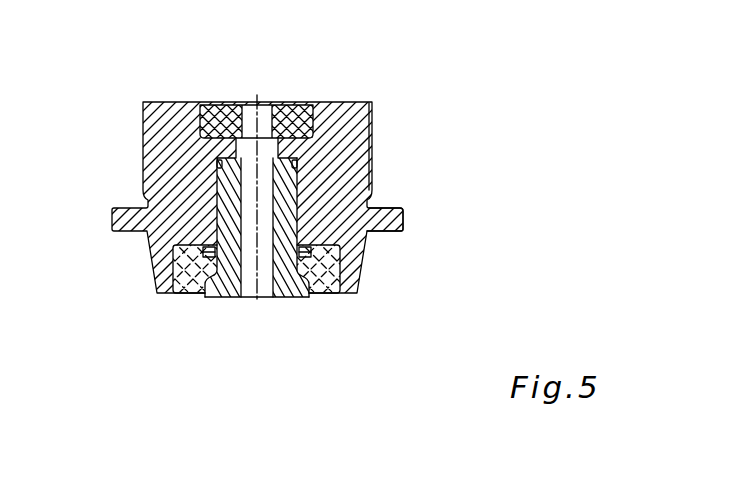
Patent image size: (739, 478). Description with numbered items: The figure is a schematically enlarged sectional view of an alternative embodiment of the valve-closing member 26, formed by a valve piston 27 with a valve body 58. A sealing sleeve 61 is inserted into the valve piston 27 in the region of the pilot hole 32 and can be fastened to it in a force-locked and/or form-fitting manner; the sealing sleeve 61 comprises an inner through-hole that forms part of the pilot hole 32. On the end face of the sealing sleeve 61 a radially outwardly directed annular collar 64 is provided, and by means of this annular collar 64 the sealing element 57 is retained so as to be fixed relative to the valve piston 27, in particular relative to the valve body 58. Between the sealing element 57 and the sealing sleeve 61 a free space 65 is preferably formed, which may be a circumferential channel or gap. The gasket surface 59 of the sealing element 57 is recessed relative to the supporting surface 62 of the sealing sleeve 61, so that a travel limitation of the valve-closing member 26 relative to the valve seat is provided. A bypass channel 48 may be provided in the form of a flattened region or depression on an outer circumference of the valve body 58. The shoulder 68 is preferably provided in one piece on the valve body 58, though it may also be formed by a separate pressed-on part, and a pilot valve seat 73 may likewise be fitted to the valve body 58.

The valve-closing member 26 is at (125, 296).
The valve piston 27 is at (402, 117).
The pilot hole 32 is at (262, 287).
The bypass channel 48 is at (375, 108).
The sealing element 57 is at (188, 287).
The valve body 58 is at (360, 162).
The gasket surface 59 is at (332, 295).
The sealing sleeve 61 is at (228, 280).
The supporting surface 62 is at (287, 303).
The annular collar 64 is at (303, 297).
The free space 65 is at (307, 252).
The shoulder 68 is at (390, 220).
The pilot valve seat 73 is at (296, 112).